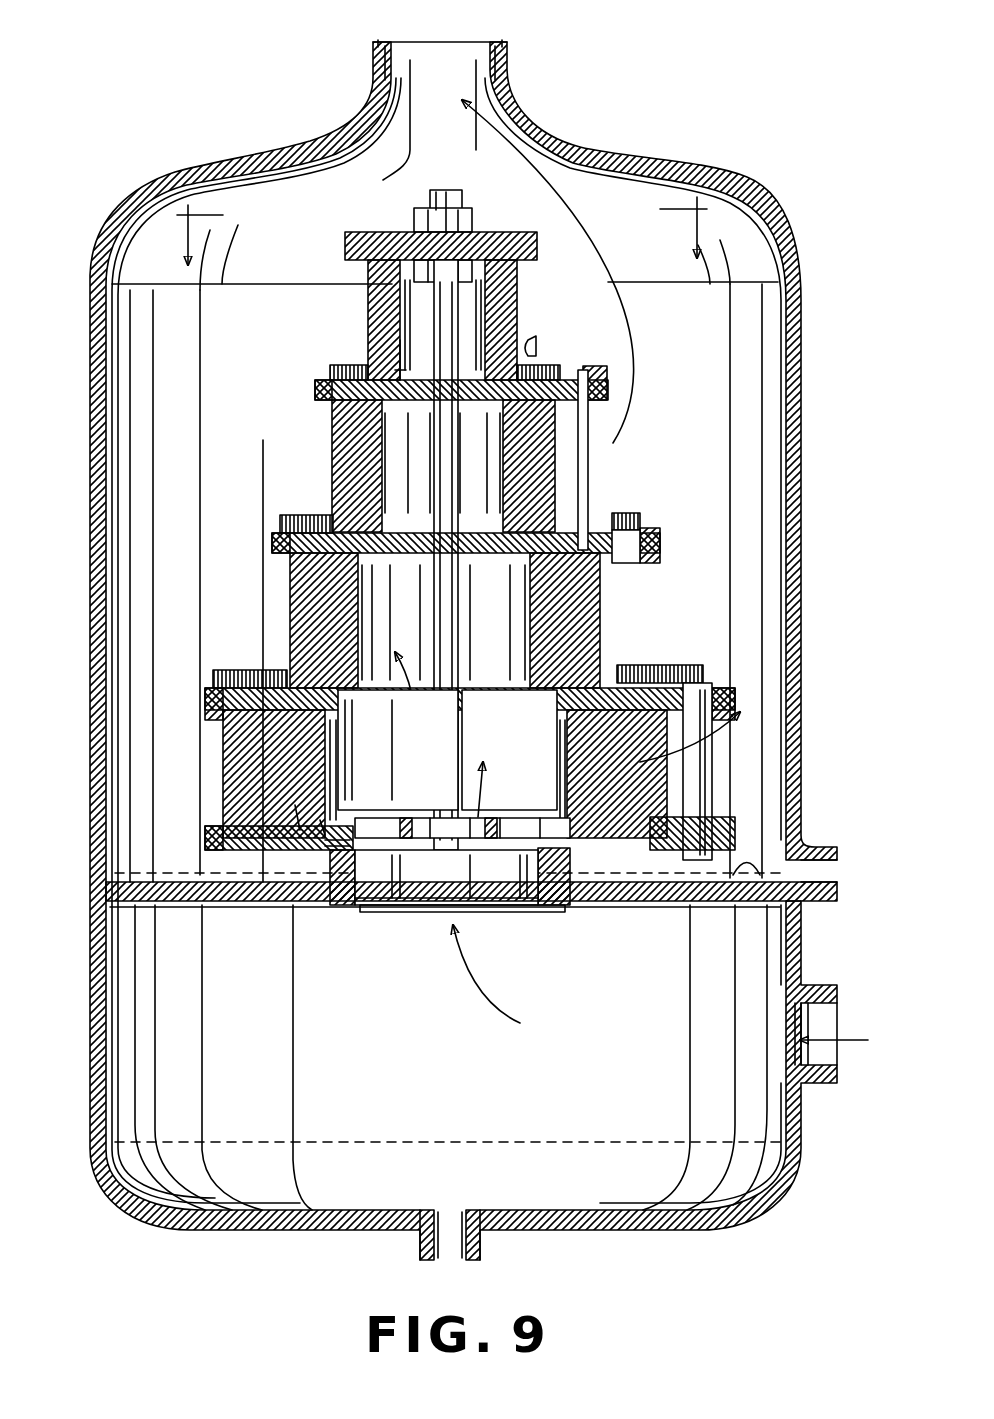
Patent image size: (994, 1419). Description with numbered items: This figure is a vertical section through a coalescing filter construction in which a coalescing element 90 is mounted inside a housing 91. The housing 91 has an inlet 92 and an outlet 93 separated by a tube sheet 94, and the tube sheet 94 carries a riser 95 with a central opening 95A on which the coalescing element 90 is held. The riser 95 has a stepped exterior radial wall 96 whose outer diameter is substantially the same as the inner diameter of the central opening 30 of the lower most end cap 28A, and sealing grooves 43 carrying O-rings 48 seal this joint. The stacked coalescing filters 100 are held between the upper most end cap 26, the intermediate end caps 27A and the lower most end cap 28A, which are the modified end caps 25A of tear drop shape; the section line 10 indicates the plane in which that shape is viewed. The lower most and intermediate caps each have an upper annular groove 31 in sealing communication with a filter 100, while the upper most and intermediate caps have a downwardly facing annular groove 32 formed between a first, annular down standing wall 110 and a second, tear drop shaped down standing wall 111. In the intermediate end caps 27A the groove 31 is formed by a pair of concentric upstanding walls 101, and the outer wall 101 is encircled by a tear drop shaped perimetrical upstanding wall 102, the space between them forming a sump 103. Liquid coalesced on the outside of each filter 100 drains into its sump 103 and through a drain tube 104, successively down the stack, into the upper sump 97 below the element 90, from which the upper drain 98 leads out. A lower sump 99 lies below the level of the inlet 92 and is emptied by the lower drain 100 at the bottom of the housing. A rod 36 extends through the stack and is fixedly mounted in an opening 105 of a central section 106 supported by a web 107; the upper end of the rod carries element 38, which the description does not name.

The section line 10- 10 is at (443, 231).
The modified end caps 25A is at (318, 395).
The upper most end cap 26 is at (346, 244).
The intermediate end caps 27A is at (320, 402).
The lower most end cap 28A is at (210, 845).
The central opening 30 is at (527, 900).
The upper annular groove 31 is at (395, 375).
The downwardly facing annular groove 32 is at (368, 272).
The rod 36 is at (453, 744).
The nut 38 is at (418, 222).
The sealing grooves 43 is at (335, 852).
The O-rings 48 is at (545, 840).
The coalescing element 90 is at (682, 472).
The housing 91 is at (742, 172).
The inlet 92 is at (830, 1028).
The outlet 93 is at (457, 38).
The tube sheet 94 is at (652, 897).
The riser 95 is at (292, 885).
The central opening 95A is at (380, 895).
The stepped exterior radial wall 96 is at (326, 893).
The upper sump 97 is at (730, 880).
The upper drain 98 is at (833, 847).
The lower sump 99 is at (330, 1140).
The coalescing filter 100 is at (368, 302).
The concentric upstanding walls 101 is at (530, 342).
The tear drop shaped perimetrical upstanding wall 102 is at (603, 365).
The sump 103 is at (326, 372).
The drain tube 104 is at (592, 470).
The opening 105 is at (437, 830).
The central section 106 is at (425, 815).
The web 107 is at (400, 820).
The first down standing wall 110 is at (476, 715).
The second down standing wall 111 is at (607, 582).